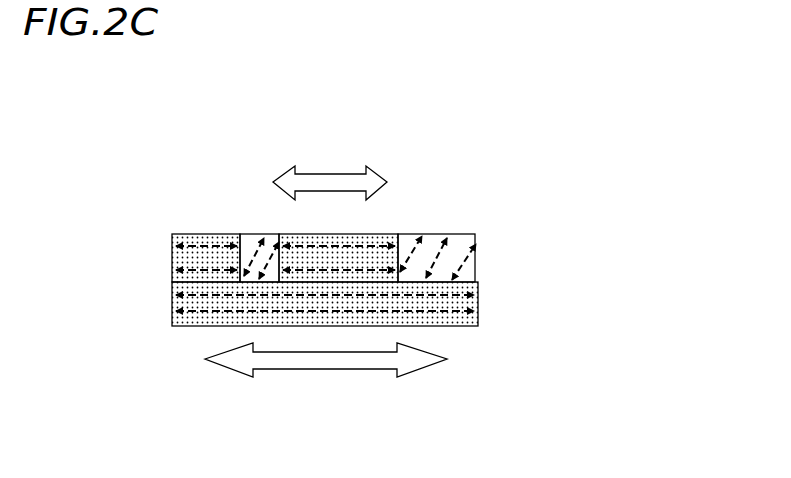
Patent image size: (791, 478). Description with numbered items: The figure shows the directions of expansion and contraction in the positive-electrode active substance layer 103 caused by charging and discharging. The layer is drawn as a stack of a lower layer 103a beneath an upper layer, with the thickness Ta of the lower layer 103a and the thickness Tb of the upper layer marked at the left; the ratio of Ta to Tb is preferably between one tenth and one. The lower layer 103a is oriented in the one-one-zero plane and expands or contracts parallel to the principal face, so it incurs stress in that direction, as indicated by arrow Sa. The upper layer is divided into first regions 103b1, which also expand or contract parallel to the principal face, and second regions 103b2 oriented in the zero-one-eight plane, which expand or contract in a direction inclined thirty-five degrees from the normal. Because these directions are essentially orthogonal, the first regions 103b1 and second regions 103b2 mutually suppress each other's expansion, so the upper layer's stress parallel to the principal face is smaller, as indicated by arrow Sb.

The positive-electrode active substance layer 103 is at (448, 254).
The lower layer 103a is at (477, 306).
The first regions 103b1 is at (279, 234).
The second regions 103b2 is at (247, 238).
The arrow Sa is at (350, 359).
The arrow Sb is at (337, 182).
The thickness of the lower layer Ta is at (168, 282).
The thickness of the upper layer Tb is at (168, 234).